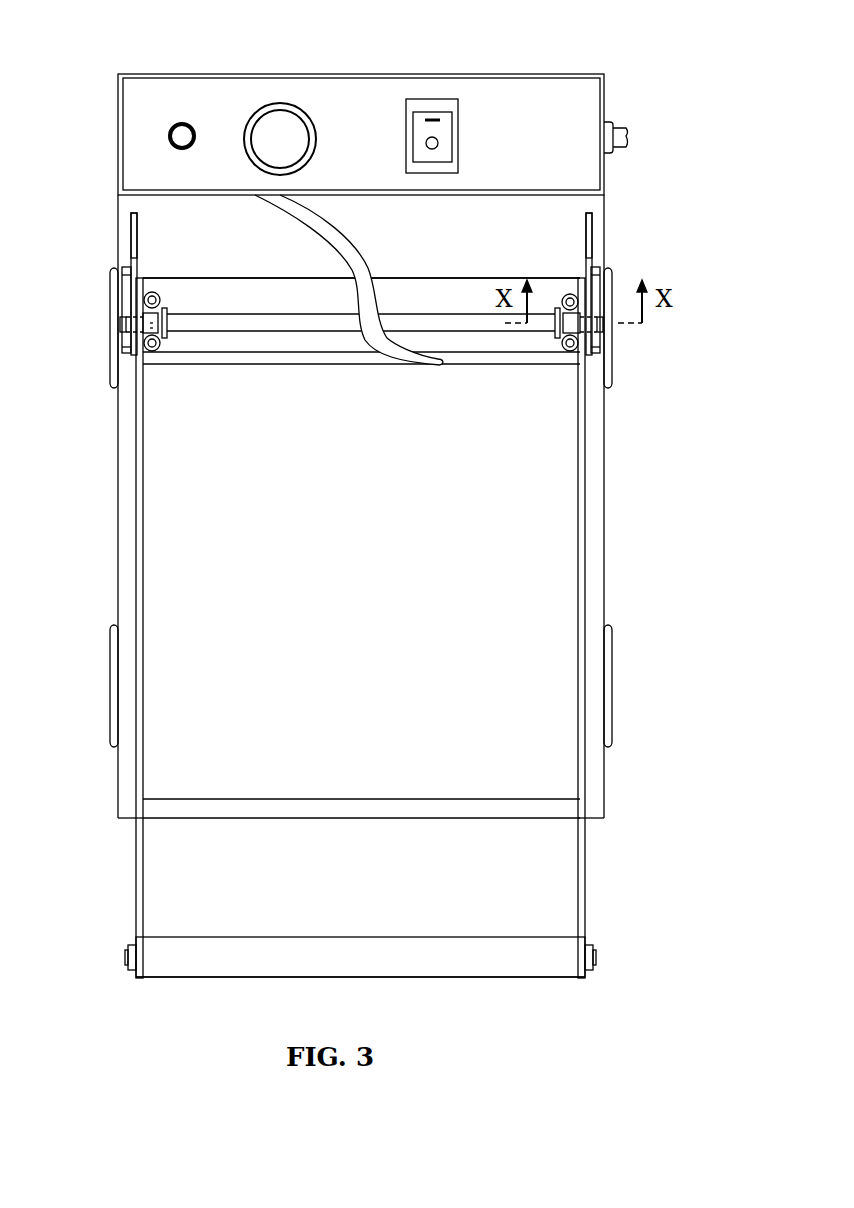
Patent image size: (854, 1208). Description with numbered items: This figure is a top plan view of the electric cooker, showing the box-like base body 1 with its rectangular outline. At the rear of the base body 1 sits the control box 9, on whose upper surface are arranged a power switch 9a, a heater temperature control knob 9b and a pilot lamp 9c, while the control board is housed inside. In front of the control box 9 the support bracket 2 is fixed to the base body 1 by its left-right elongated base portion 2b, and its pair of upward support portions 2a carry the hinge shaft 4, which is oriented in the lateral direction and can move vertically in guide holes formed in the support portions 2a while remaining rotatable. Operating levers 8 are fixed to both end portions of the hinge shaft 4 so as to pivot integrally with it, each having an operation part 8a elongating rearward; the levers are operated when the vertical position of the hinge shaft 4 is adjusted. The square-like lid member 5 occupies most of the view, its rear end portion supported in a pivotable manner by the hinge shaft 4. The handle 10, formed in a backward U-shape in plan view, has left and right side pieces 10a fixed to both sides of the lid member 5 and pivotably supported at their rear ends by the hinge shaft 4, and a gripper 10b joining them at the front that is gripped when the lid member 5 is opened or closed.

The base body 1 is at (606, 462).
The support bracket 2 is at (508, 272).
The support portions 2a is at (125, 349).
The base portion 2b is at (253, 342).
The hinge shaft 4 is at (460, 314).
The lid member 5 is at (531, 802).
The operating lever 8 is at (130, 232).
The operation part 8a is at (132, 213).
The control box 9 is at (117, 125).
The power switch 9a is at (433, 99).
The heater temperature control knob 9b is at (281, 103).
The pilot lamp 9c is at (182, 124).
The handle 10 is at (140, 852).
The side pieces 10a is at (137, 577).
The gripper 10b is at (260, 977).